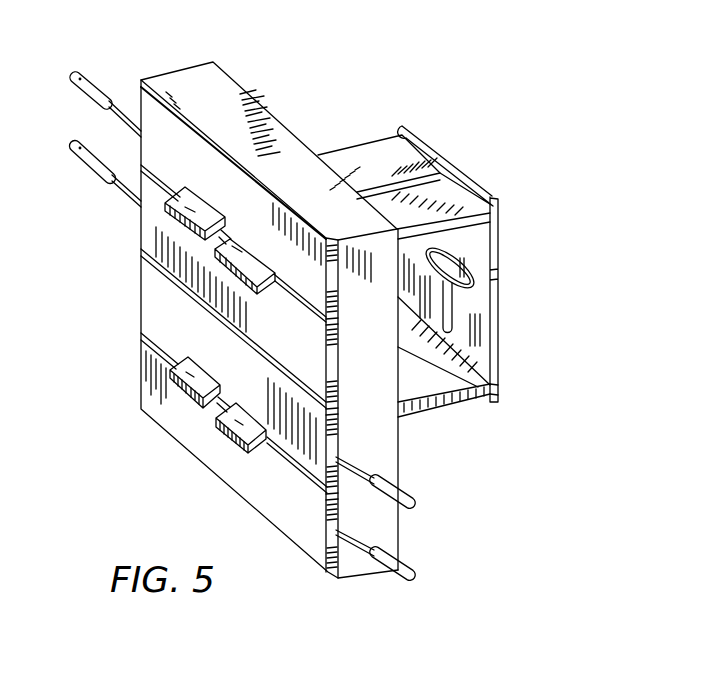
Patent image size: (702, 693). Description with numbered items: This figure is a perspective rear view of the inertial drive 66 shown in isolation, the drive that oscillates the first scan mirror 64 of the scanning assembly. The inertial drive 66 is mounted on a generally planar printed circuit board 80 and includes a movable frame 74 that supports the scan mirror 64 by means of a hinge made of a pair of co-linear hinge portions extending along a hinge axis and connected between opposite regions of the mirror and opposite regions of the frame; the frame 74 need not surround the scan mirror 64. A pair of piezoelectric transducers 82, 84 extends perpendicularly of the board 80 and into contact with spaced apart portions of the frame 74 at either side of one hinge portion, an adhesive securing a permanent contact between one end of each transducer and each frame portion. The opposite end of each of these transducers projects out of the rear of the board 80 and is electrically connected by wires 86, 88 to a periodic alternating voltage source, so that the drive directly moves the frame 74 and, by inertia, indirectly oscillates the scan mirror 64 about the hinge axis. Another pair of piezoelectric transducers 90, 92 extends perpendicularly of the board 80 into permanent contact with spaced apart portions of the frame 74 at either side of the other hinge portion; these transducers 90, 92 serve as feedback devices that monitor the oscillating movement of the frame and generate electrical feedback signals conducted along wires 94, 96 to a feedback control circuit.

The first scan mirror 64 is at (474, 388).
The inertial drive 66 is at (453, 119).
The movable frame 74 is at (473, 253).
The printed circuit board 80 is at (141, 79).
The piezoelectric transducer 82 is at (452, 198).
The piezoelectric transducer 84 is at (378, 157).
The wire 86 is at (99, 93).
The wire 88 is at (88, 146).
The piezoelectric transducer 90 is at (478, 398).
The piezoelectric transducer 92 is at (398, 340).
The wire 94 is at (412, 507).
The wire 96 is at (411, 580).